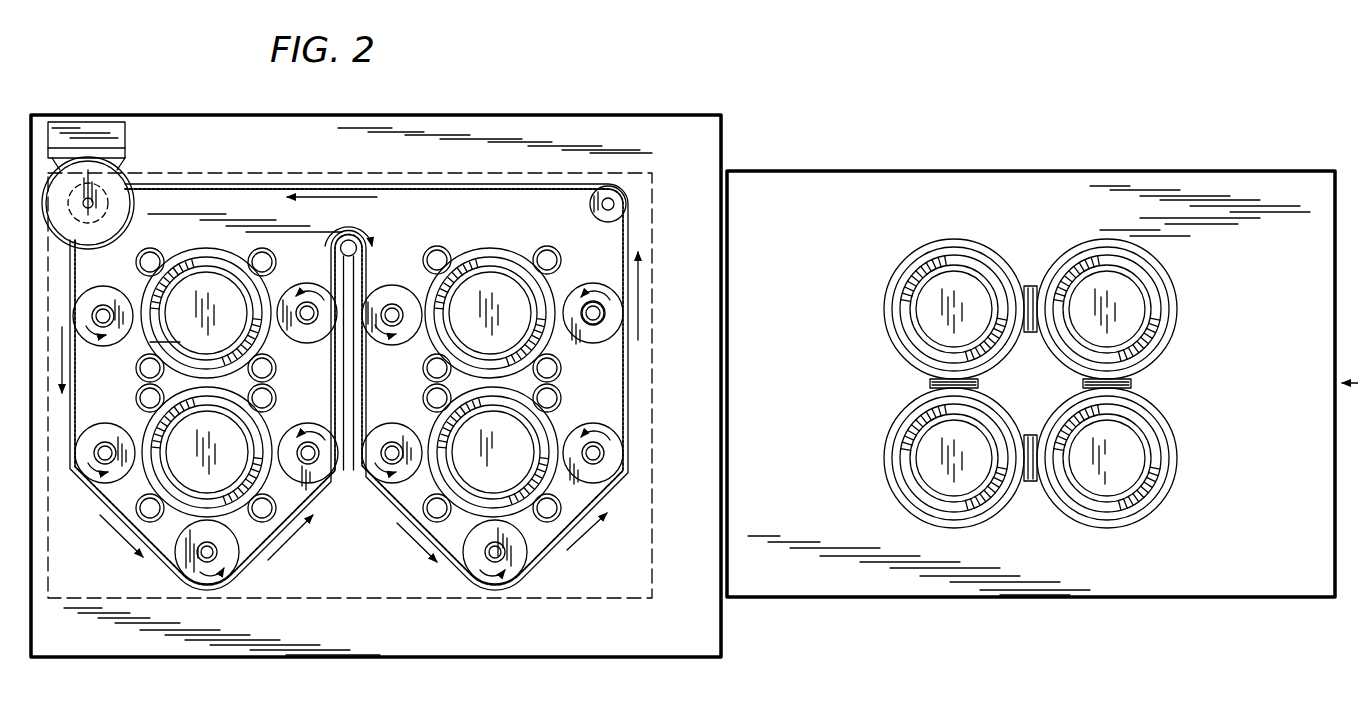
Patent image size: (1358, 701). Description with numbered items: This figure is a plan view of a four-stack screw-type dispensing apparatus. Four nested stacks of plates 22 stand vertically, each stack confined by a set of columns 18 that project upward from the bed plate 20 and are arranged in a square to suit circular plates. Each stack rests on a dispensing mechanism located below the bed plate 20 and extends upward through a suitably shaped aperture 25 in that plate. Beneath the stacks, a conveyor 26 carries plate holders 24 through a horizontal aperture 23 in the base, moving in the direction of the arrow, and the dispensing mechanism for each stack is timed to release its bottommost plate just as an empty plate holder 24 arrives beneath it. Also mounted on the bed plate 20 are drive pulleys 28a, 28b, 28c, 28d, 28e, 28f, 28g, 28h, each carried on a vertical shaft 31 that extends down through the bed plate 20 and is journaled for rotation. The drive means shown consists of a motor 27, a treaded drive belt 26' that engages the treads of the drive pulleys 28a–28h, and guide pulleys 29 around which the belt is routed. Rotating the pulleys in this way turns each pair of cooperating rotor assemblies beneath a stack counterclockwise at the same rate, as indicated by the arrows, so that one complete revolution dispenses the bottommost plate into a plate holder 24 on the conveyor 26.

The columns 18 is at (545, 523).
The bed plate 20 is at (700, 276).
The nested stacks of plates 22 is at (524, 461).
The horizontal aperture 23 is at (636, 203).
The plate holders 24 is at (1128, 458).
The apertures 25 is at (430, 425).
The conveyor 26 is at (1031, 384).
The treaded drive belt 26' is at (350, 368).
The motor 27 is at (103, 168).
The drive pulley 28a is at (398, 292).
The drive pulley 28b is at (595, 290).
The drive pulley 28c is at (372, 462).
The drive pulley 28d is at (593, 430).
The drive pulley 28e is at (304, 290).
The drive pulley 28f is at (105, 294).
The drive pulley 28g is at (105, 432).
The drive pulley 28h is at (311, 430).
The guide pulleys 29 is at (612, 190).
The vertical shafts 31 is at (598, 322).